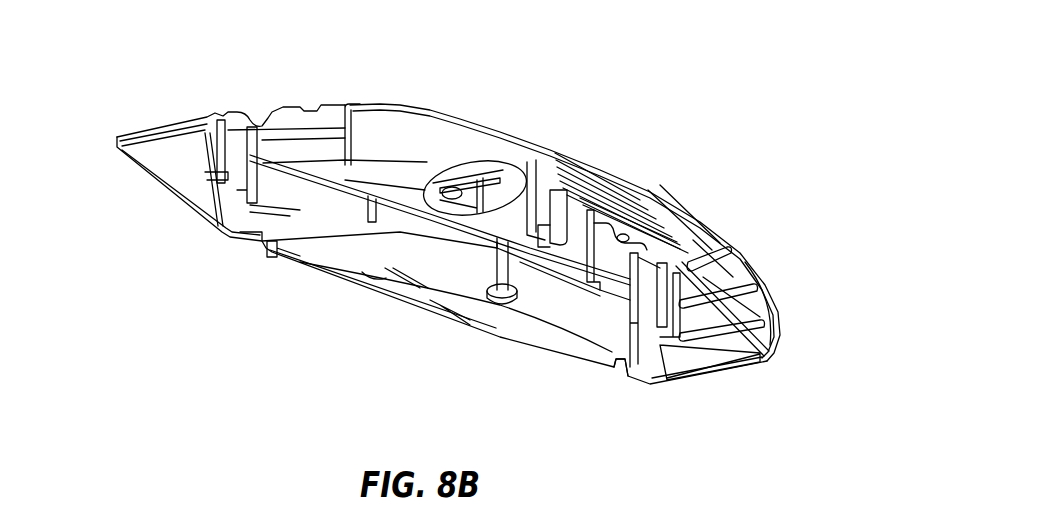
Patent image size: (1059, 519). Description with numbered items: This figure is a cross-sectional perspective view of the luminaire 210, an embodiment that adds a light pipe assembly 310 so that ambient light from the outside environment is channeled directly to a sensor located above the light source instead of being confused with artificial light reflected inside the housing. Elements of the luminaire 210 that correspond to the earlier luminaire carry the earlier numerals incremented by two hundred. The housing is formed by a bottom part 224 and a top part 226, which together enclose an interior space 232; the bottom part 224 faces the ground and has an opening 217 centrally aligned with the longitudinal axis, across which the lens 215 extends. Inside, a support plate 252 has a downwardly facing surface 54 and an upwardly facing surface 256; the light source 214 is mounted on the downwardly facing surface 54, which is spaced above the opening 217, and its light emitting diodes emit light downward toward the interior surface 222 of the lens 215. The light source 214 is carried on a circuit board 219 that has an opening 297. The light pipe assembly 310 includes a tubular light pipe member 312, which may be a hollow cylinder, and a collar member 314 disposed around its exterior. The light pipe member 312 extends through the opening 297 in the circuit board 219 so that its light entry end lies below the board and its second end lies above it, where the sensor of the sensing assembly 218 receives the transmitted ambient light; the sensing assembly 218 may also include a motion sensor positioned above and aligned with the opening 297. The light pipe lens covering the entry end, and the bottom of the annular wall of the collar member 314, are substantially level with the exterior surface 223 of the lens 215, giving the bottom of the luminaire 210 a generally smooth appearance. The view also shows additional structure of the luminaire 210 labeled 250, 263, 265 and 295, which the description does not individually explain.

The luminaire 210 is at (155, 98).
The outer lens cover 250 is at (417, 156).
The top part of the housing 226 is at (356, 100).
The upwardly facing surface 256 is at (380, 190).
The support plate 252 is at (261, 178).
The downwardly facing surface 54 is at (265, 243).
The interior space 232 is at (337, 224).
The lens 215 is at (330, 290).
The interior surface of the lens 222 is at (366, 278).
The exterior surface of the lens 223 is at (397, 298).
The circuit board 219 is at (440, 235).
The light pipe assembly 310 is at (470, 292).
The tubular light pipe member 312 is at (518, 296).
The collar member 314 is at (508, 298).
The light source 214 is at (578, 282).
The opening 217 is at (620, 375).
The bottom part of the housing 224 is at (735, 368).
The bracket 265 is at (473, 173).
The mounting plate 295 is at (490, 200).
The sensing assembly 218 is at (511, 176).
The opening in the circuit board 297 is at (528, 225).
The vent fins 263 is at (563, 250).